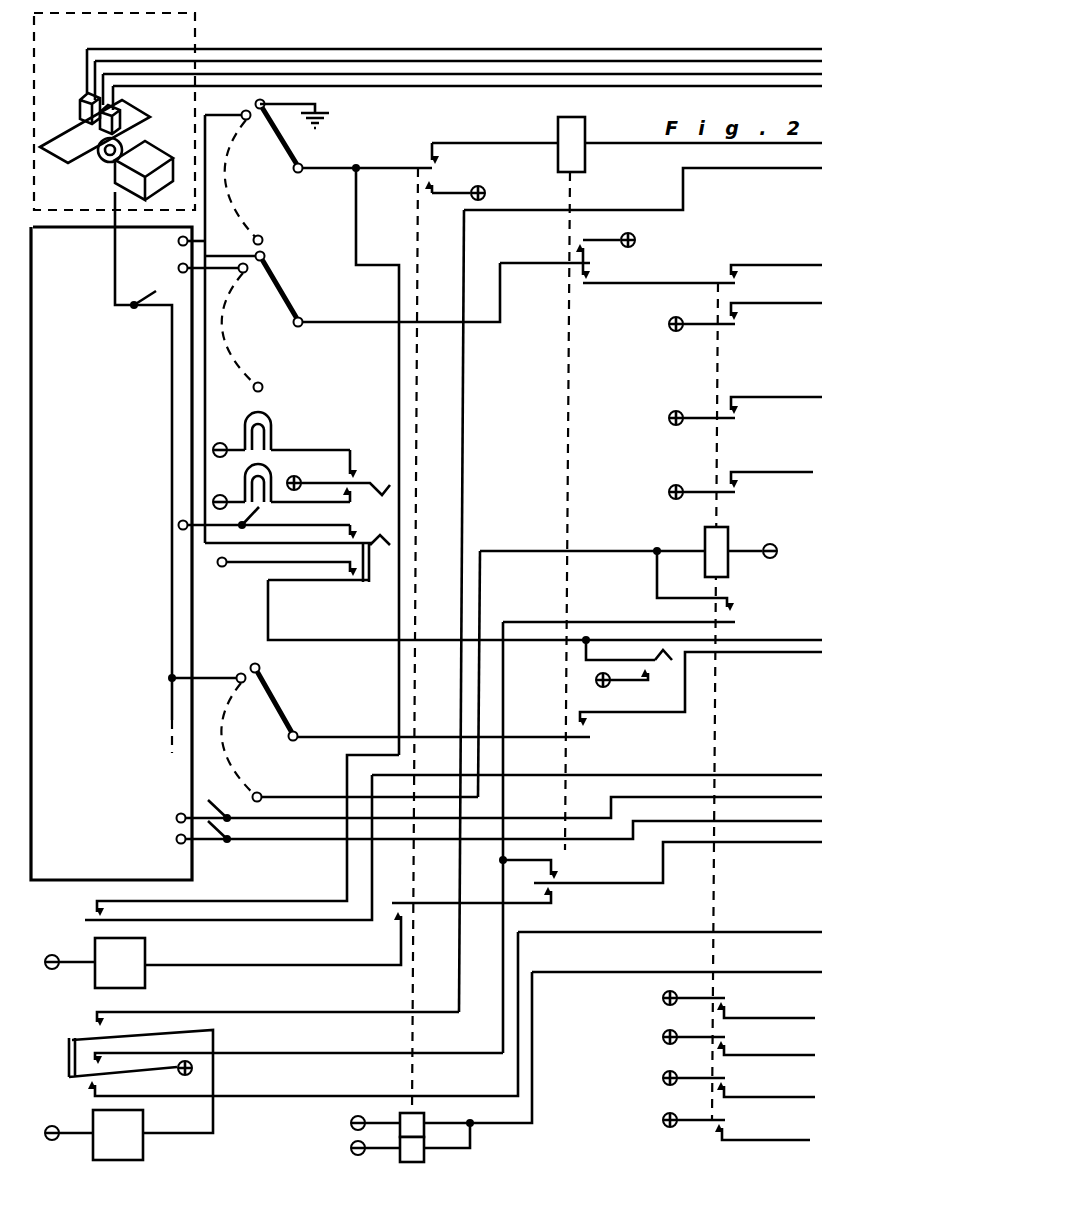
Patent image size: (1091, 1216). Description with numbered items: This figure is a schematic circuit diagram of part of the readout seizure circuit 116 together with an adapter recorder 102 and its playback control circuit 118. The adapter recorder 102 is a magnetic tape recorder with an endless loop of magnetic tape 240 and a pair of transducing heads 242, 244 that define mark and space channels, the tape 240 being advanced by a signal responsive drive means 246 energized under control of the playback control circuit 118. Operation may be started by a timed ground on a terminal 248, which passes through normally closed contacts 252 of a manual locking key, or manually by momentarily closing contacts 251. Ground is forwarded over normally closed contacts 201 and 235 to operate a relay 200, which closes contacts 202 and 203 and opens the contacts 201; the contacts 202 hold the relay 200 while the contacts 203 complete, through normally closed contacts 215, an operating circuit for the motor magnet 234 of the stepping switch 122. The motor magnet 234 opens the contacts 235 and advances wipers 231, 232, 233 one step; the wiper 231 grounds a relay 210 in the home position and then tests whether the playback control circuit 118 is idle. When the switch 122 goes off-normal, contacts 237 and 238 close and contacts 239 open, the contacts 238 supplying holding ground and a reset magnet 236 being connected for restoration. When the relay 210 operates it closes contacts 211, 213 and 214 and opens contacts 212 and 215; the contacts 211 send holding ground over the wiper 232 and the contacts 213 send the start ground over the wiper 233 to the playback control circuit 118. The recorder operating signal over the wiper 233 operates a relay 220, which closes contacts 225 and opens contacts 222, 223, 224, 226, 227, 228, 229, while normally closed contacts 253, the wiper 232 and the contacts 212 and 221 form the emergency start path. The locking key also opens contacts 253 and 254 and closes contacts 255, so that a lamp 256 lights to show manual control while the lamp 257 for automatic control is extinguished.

The adapter recorder 102 is at (192, 40).
The readout seizure circuit 116 is at (680, 42).
The playback control circuit 118 is at (111, 553).
The stepping switch 122 is at (303, 161).
The relay 200 is at (424, 1160).
The normally closed contacts 201 is at (425, 165).
The contacts 202 is at (440, 186).
The contacts 203 is at (393, 903).
The relay 210 is at (587, 122).
The contacts 211 is at (574, 260).
The normally closed contacts 212 is at (590, 268).
The contacts 213 is at (583, 735).
The contacts 214 is at (558, 878).
The normally closed contacts 215 is at (555, 888).
The relay 220 is at (703, 545).
The contacts 221 is at (737, 280).
The contacts 222 is at (737, 324).
The contacts 223 is at (737, 418).
The contacts 224 is at (737, 491).
The contacts 225 is at (732, 614).
The contacts 226 is at (732, 1006).
The contacts 227 is at (732, 1044).
The contacts 228 is at (732, 1086).
The contacts 229 is at (730, 1128).
The wiper 231 is at (280, 144).
The wiper 232 is at (272, 286).
The wiper 233 is at (280, 703).
The motor magnet 234 is at (147, 951).
The normally closed contacts 235 is at (92, 913).
The reset magnet 236 is at (145, 1147).
The contacts 237 is at (90, 1028).
The contacts 238 is at (88, 1067).
The normally closed contacts 239 is at (90, 1080).
The magnetic tape 240 is at (135, 115).
The transducing head 242 is at (80, 105).
The transducing head 244 is at (100, 132).
The signal responsive drive means 246 is at (127, 170).
The terminal 248 is at (220, 566).
The contacts 251 is at (655, 668).
The normally closed contacts 252 is at (352, 574).
The normally closed contacts 253 is at (352, 530).
The contacts 254 is at (355, 488).
The contacts 255 is at (355, 474).
The lamp 256 is at (268, 420).
The lamp 257 is at (256, 466).